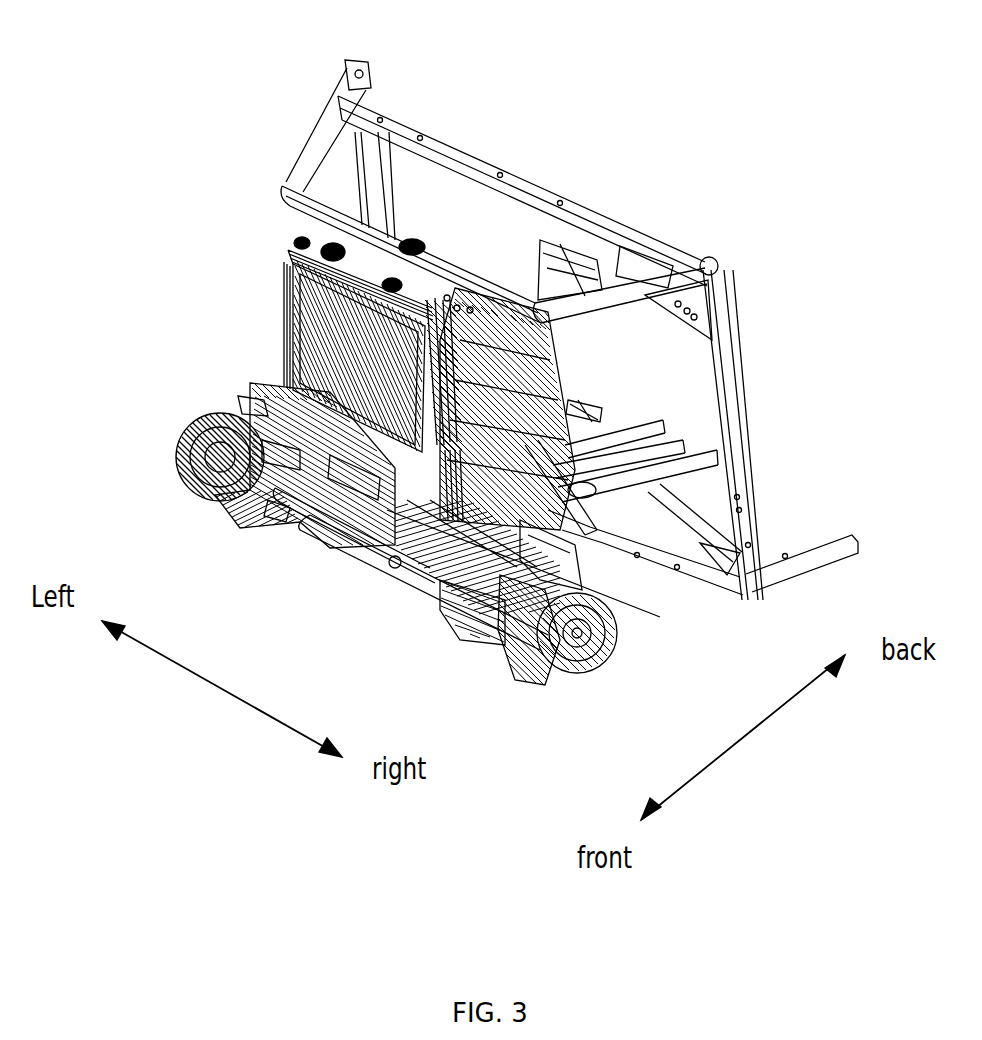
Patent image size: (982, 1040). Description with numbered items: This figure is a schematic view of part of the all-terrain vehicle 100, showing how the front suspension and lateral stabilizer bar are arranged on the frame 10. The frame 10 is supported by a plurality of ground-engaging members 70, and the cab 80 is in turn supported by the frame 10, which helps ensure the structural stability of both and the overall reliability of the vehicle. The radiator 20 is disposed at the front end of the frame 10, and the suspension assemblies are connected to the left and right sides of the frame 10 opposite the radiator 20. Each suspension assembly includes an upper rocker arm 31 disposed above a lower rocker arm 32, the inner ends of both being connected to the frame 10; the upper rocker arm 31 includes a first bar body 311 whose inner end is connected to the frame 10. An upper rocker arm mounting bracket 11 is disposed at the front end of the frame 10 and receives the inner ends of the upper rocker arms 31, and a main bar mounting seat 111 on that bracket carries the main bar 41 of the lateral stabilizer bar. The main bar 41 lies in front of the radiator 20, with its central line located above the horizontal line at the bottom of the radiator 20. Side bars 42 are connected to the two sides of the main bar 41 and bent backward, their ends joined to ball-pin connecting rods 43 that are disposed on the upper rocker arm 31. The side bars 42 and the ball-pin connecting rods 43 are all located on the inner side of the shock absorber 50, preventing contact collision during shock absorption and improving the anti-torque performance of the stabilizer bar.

The all-terrain vehicle 100 is at (555, 42).
The cab 80 is at (508, 176).
The frame 10 is at (287, 186).
The radiator 20 is at (300, 331).
The main bar mounting seat 111 is at (240, 407).
The main bar 41 is at (183, 445).
The upper rocker arm mounting bracket 11 is at (200, 489).
The upper rocker arm 31 is at (395, 560).
The first bar body 311 is at (302, 586).
The lower rocker arm 32 is at (447, 585).
The side bar 42 is at (490, 465).
The ball-pin connecting rod 43 is at (570, 682).
The shock absorber 50 is at (577, 540).
The ground-engaging member 70 is at (541, 690).